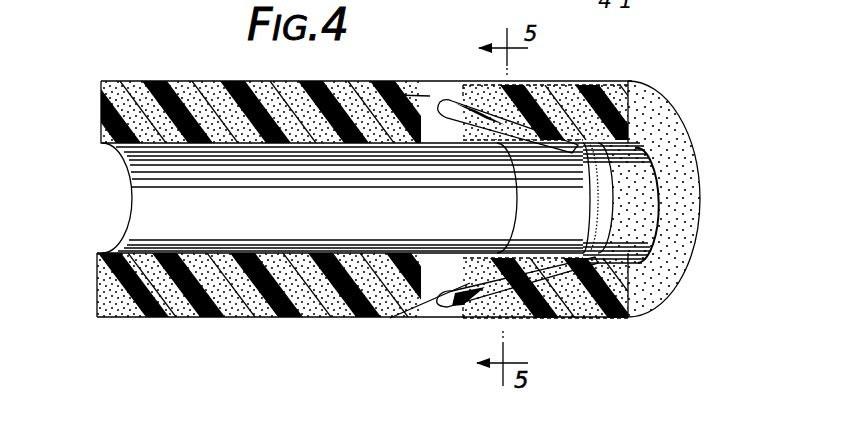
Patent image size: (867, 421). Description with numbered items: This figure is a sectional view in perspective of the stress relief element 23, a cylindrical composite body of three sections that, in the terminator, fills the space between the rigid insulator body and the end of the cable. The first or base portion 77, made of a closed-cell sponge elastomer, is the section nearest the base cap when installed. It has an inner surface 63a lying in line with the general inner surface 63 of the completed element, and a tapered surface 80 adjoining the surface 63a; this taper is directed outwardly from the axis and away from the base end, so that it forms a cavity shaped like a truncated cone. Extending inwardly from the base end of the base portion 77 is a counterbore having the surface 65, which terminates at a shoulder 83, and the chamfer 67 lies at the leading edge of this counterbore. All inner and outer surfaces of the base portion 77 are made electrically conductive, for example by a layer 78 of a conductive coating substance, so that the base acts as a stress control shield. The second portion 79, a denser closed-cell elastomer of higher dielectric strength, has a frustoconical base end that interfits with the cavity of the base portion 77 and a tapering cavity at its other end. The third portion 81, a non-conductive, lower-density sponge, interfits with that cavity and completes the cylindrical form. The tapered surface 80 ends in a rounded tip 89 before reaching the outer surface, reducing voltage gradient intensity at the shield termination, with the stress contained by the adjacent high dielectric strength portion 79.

The stress relief element 23 is at (172, 51).
The general inner surface 63 is at (318, 237).
The inner surface 63a is at (642, 143).
The counterbore surface 65 is at (642, 197).
The chamfer 67 is at (650, 155).
The base portion 77 is at (600, 92).
The conductive coating layer 78 is at (675, 252).
The second portion 79 is at (405, 87).
The tapered surface 80 is at (483, 110).
The third portion 81 is at (202, 90).
The shoulder 83 is at (573, 310).
The rounded tip 89 is at (440, 298).